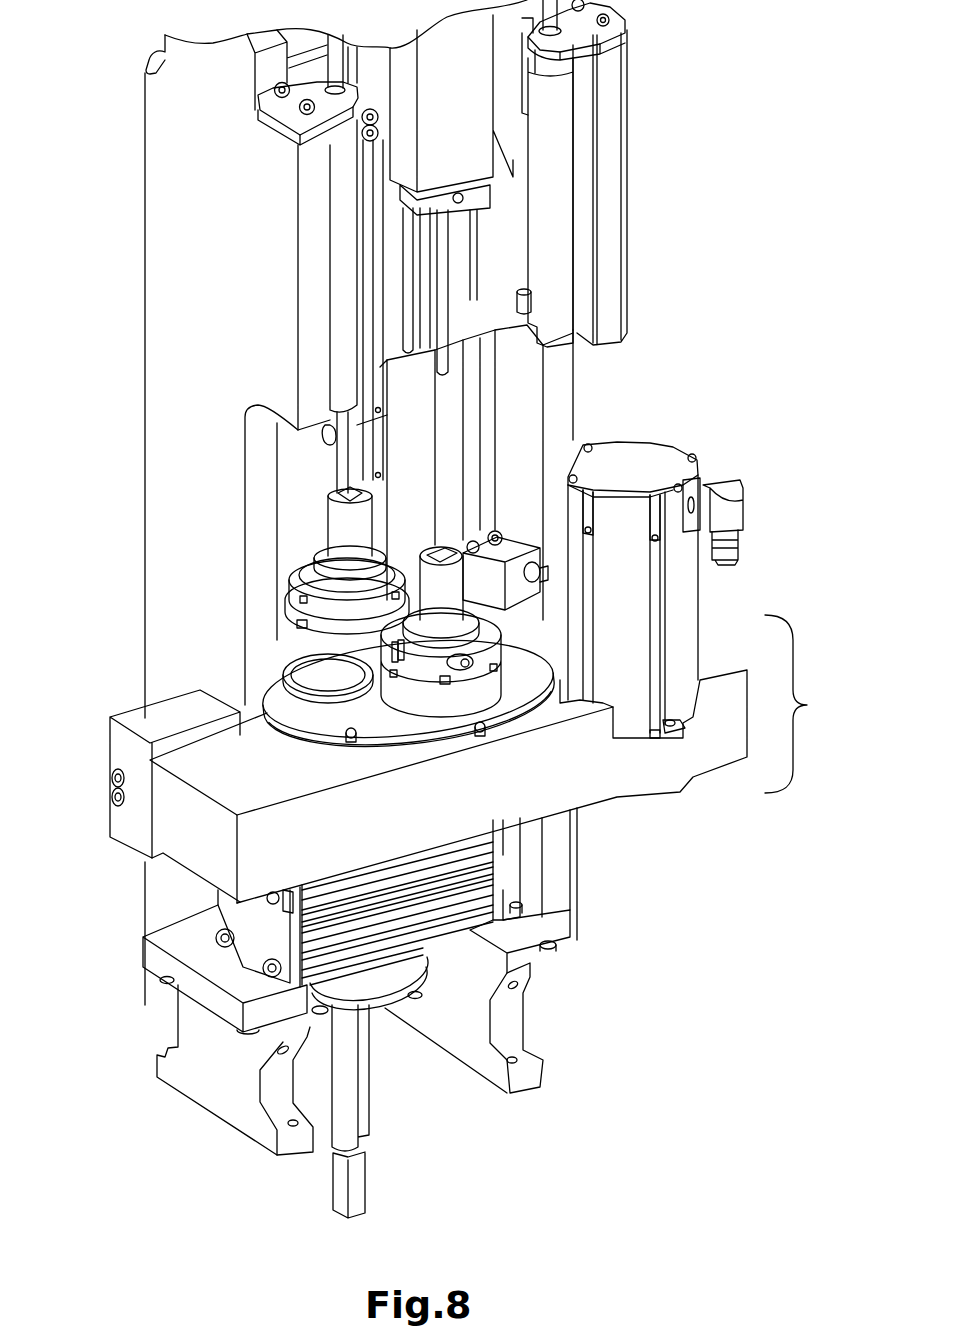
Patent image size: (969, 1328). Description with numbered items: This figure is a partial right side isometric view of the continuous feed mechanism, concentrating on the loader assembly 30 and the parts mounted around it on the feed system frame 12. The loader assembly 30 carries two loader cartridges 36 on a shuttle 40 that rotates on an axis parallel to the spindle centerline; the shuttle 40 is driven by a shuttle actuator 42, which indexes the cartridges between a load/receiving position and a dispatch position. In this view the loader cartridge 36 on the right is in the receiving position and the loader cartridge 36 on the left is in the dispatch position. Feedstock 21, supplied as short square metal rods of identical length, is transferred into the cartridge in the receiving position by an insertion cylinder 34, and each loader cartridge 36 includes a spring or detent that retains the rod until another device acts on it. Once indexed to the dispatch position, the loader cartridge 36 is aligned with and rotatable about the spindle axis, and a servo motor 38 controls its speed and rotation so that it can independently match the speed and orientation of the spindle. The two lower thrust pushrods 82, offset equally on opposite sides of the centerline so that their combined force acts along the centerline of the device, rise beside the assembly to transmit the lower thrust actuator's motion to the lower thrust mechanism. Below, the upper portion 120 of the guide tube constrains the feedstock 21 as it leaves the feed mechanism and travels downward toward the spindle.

The feed system frame 12 is at (168, 440).
The feedstock 21 is at (445, 547).
The loader assembly 30 is at (805, 704).
The insertion cylinder 34 is at (466, 98).
The loader cartridge 36 is at (323, 623).
The servo motor 38 is at (640, 618).
The shuttle 40 is at (365, 705).
The shuttle actuator 42 is at (257, 930).
The lower thrust pushrods 82 is at (480, 393).
The upper portion of guide tube 120 is at (350, 1088).